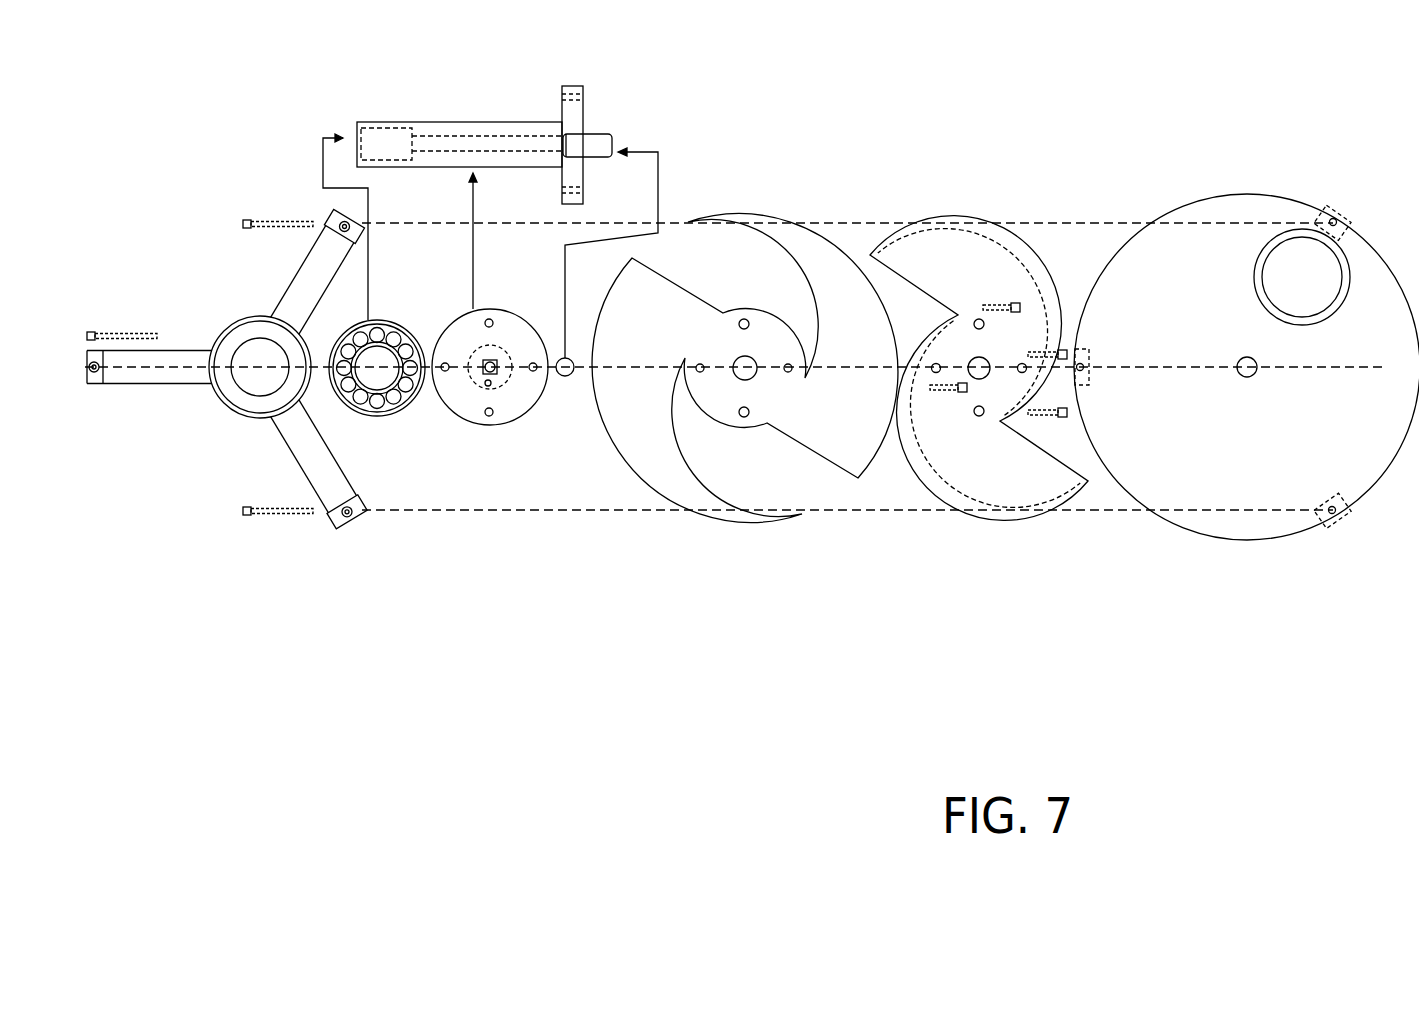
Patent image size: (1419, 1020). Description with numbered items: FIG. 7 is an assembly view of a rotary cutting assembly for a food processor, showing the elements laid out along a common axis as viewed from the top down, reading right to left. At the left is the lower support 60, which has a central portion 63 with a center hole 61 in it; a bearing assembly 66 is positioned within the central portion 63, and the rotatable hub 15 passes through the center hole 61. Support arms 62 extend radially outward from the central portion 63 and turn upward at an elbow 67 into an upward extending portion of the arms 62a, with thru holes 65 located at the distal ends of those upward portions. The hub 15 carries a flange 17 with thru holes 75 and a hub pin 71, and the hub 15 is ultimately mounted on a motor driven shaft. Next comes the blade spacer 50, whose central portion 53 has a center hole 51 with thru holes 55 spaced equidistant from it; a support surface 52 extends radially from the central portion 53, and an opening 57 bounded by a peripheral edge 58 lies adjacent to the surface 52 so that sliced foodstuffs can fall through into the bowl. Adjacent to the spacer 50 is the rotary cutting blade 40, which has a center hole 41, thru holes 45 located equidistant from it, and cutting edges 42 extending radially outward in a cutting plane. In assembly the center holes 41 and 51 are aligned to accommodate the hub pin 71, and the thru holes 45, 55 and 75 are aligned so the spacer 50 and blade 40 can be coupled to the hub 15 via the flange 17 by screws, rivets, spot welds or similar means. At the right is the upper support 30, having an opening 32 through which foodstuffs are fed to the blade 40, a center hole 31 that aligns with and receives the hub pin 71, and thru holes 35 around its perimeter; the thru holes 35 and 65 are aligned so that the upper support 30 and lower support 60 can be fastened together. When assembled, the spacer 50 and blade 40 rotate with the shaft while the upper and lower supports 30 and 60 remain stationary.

The rotatable hub 15 is at (522, 122).
The flange 17 is at (585, 117).
The hub pin 71 is at (608, 153).
The thru holes 75 is at (534, 372).
The upper support 30 is at (1246, 382).
The center hole 31 is at (1249, 377).
The opening 32 is at (1322, 290).
The thru holes 35 is at (1334, 219).
The rotary cutting blade 40 is at (979, 415).
The center hole 41 is at (979, 365).
The cutting edge 42 is at (956, 484).
The thru holes 45 is at (979, 416).
The blade spacer 50 is at (733, 415).
The center hole 51 is at (745, 362).
The support surface 52 is at (628, 455).
The central portion 53 is at (744, 350).
The thru holes 55 is at (744, 320).
The opening 57 is at (732, 431).
The peripheral edge 58 is at (742, 510).
The lower support 60 is at (256, 452).
The center hole 61 is at (260, 367).
The support arms 62 is at (128, 375).
The upward extending portion of the arms 62a is at (327, 523).
The central portion 63 is at (237, 417).
The thru holes 65 is at (353, 513).
The bearing assembly 66 is at (384, 416).
The elbow 67 is at (330, 512).